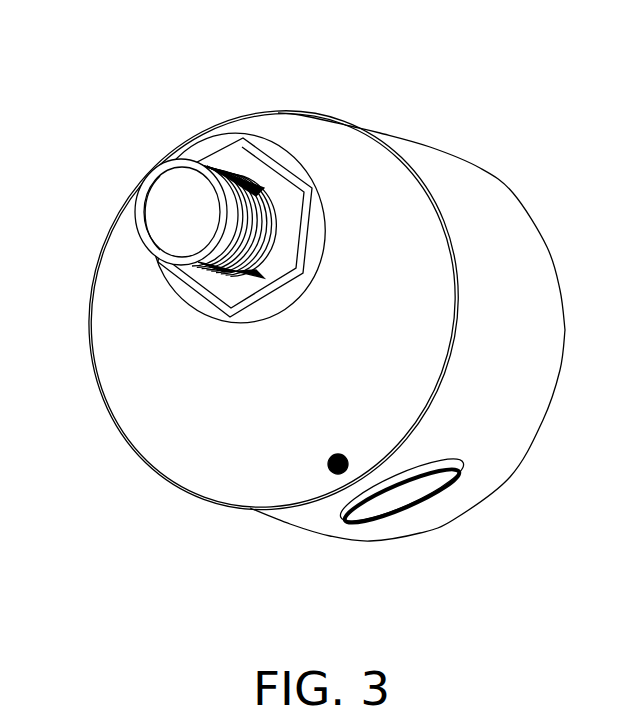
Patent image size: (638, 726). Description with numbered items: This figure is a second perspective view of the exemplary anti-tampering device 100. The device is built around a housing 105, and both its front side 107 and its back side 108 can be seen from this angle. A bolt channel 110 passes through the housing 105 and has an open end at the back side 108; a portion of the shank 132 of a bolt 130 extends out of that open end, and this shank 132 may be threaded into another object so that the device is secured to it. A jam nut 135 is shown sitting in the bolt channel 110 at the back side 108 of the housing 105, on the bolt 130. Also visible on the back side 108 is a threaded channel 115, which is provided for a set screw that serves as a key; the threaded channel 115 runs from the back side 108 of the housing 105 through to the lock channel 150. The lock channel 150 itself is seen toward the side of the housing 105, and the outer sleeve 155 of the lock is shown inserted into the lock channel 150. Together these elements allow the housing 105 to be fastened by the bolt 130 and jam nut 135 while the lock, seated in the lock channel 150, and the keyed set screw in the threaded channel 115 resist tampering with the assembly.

The anti-tampering device 100 is at (488, 158).
The housing 105 is at (417, 162).
The front side 107 is at (565, 320).
The back side 108 is at (183, 450).
The bolt channel 110 is at (207, 320).
The threaded channel 115 is at (330, 474).
The bolt 130 is at (190, 157).
The shank 132 is at (148, 199).
The jam nut 135 is at (240, 158).
The lock channel 150 is at (457, 467).
The outer sleeve 155 is at (452, 495).